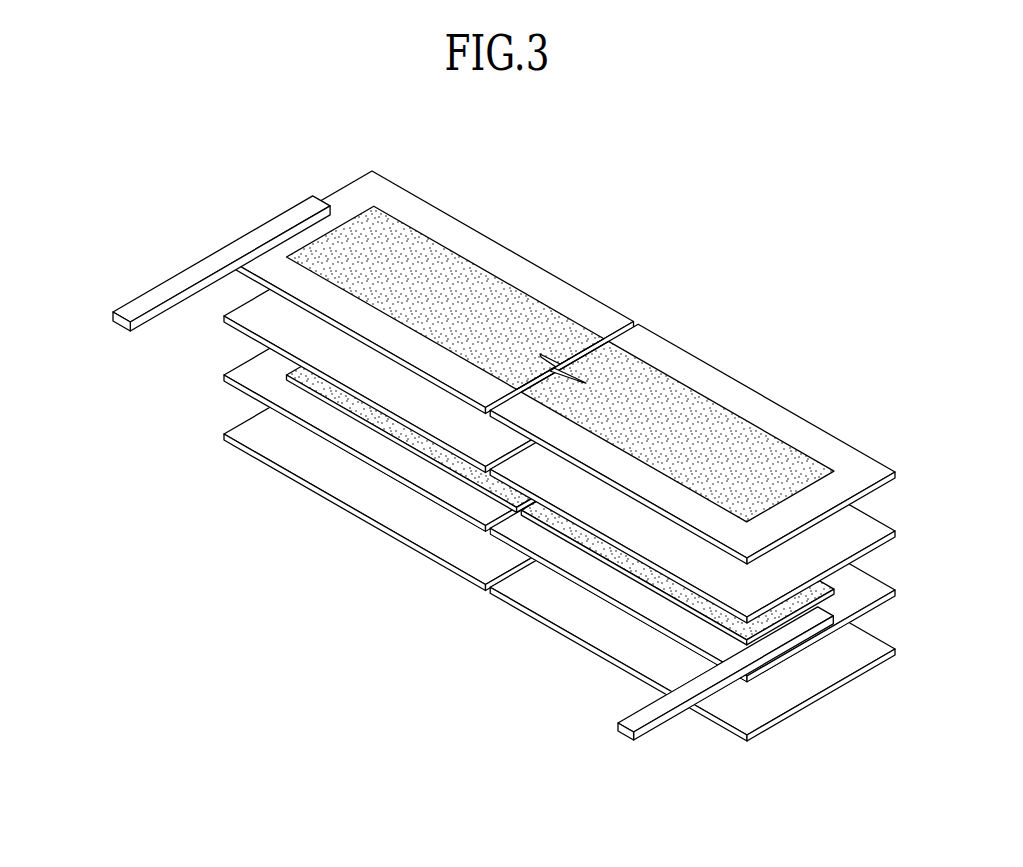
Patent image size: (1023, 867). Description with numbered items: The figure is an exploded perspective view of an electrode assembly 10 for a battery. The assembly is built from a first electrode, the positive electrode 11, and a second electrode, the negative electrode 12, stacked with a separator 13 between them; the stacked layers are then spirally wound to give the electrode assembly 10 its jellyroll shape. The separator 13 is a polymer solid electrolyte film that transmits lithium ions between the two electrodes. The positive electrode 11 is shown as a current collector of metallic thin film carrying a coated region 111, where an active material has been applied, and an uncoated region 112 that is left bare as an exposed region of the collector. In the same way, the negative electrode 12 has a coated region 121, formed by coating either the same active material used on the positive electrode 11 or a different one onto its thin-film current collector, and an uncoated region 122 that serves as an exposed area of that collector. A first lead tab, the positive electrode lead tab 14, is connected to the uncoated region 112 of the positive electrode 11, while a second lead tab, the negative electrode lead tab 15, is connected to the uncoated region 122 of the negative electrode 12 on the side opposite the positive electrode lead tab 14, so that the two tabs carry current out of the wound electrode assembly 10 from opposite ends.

The electrode assembly 10 is at (643, 199).
The first electrode 11 is at (598, 516).
The coated region 111 is at (806, 601).
The uncoated region 112 is at (862, 596).
The second electrode 12 is at (559, 332).
The coated region 121 is at (415, 250).
The uncoated region 122 is at (455, 240).
The separator 13 is at (252, 322).
The first lead tab 14 is at (651, 717).
The second lead tab 15 is at (170, 292).